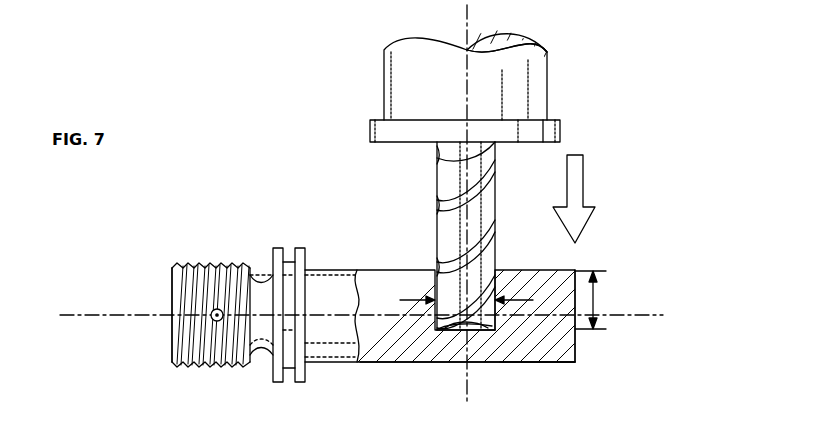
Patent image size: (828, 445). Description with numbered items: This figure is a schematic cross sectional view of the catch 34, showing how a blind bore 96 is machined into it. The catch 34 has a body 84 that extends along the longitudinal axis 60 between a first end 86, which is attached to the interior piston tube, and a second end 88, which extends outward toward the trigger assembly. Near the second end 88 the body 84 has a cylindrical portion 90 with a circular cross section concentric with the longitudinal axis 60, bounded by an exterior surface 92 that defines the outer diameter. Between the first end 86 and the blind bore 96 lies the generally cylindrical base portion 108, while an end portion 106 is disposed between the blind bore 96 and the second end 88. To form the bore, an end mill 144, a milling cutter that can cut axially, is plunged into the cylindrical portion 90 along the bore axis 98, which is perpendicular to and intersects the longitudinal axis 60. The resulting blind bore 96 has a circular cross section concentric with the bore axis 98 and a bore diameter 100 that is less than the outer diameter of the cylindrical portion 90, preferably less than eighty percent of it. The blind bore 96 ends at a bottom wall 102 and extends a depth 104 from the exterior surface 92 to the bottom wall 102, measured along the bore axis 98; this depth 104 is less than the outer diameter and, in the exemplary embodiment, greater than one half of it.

The catch 34 is at (488, 305).
The longitudinal axis 60 is at (637, 315).
The body 84 is at (342, 282).
The first end 86 is at (172, 345).
The second end 88 is at (577, 338).
The cylindrical portion 90 is at (417, 363).
The exterior surface 92 is at (328, 343).
The blind bore 96 is at (437, 262).
The bore axis 98 is at (470, 380).
The bore diameter 100 is at (518, 296).
The bottom wall 102 is at (460, 332).
The depth 104 is at (597, 293).
The end portion 106 is at (577, 351).
The base portion 108 is at (212, 264).
The end mill 144 is at (548, 90).